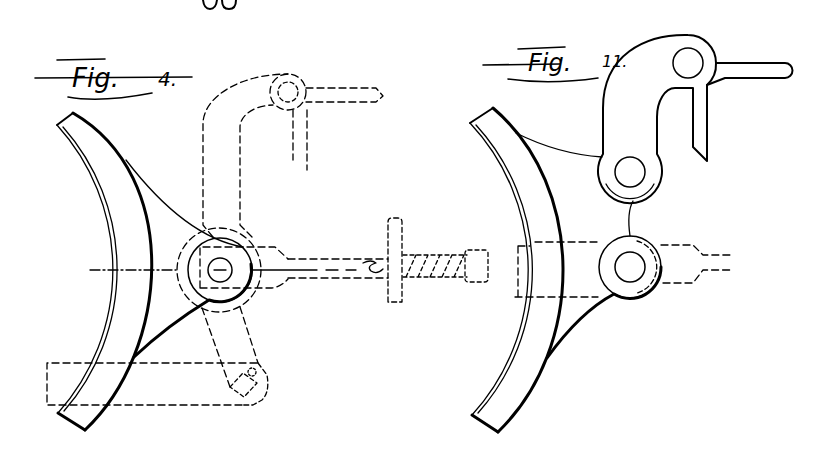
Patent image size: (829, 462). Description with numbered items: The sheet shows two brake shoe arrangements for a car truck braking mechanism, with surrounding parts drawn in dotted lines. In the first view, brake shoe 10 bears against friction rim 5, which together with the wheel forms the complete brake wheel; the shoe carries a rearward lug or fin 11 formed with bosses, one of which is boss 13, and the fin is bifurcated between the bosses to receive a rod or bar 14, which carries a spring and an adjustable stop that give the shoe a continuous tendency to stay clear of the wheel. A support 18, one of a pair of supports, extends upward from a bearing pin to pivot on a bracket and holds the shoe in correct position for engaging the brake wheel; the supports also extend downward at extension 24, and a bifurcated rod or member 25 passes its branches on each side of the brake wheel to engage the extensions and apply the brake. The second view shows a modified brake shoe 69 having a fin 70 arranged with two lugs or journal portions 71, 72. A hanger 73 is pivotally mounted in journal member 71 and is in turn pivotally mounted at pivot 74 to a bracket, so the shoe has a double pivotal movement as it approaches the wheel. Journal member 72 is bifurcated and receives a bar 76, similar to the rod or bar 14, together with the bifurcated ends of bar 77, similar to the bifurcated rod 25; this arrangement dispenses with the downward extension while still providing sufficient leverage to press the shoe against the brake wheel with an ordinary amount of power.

In FIG. 4, the friction rim 5 is at (214, 270).
In FIG. 4, the brake shoe 10 is at (112, 178).
In FIG. 4, the lug or fin 11 is at (147, 197).
In FIG. 4, the boss 13 is at (257, 306).
In FIG. 4, the rod or bar 14 is at (345, 277).
In FIG. 4, the support 18 is at (225, 157).
In FIG. 4, the extension 24 is at (257, 345).
In FIG. 4, the bifurcated rod or member 25 is at (62, 367).
In FIG. 11, the brake shoe 69 is at (503, 165).
In FIG. 11, the fin 70 is at (543, 148).
In FIG. 11, the lug or journal portion 71 is at (648, 178).
In FIG. 11, the lug or journal portion 72 is at (642, 299).
In FIG. 11, the hanger 73 is at (640, 132).
In FIG. 11, the pivot 74 is at (680, 52).
In FIG. 11, the bar 76 is at (668, 274).
In FIG. 11, the bar 77 is at (578, 252).